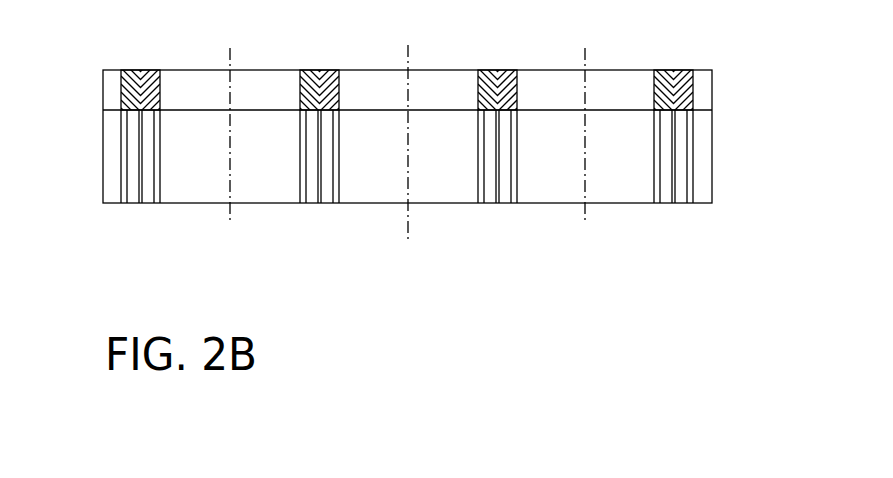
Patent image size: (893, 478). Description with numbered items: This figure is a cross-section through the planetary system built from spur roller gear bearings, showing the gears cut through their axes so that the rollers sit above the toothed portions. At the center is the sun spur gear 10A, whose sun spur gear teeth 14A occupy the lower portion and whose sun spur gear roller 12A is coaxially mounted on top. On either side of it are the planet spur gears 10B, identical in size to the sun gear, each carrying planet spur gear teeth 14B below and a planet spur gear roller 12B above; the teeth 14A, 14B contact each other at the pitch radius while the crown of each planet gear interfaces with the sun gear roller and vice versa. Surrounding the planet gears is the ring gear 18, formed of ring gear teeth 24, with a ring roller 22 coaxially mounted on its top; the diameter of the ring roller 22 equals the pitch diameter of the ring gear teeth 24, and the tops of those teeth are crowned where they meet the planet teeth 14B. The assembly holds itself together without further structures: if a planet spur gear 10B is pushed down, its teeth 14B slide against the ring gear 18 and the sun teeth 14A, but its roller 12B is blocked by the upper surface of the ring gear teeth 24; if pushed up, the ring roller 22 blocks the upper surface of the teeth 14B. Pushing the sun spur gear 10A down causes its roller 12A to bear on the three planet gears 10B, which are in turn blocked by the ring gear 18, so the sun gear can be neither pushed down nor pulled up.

The ring gear 18 is at (110, 143).
The ring roller 22 is at (135, 70).
The ring gear teeth 24 is at (135, 203).
The sun spur gear teeth 14A is at (323, 203).
The planet spur gear teeth 14B is at (148, 203).
The sun spur gear roller 12A is at (383, 75).
The planet spur gear roller 12B is at (262, 75).
The sun spur gear 10A is at (438, 183).
The planet spur gear 10B is at (255, 182).